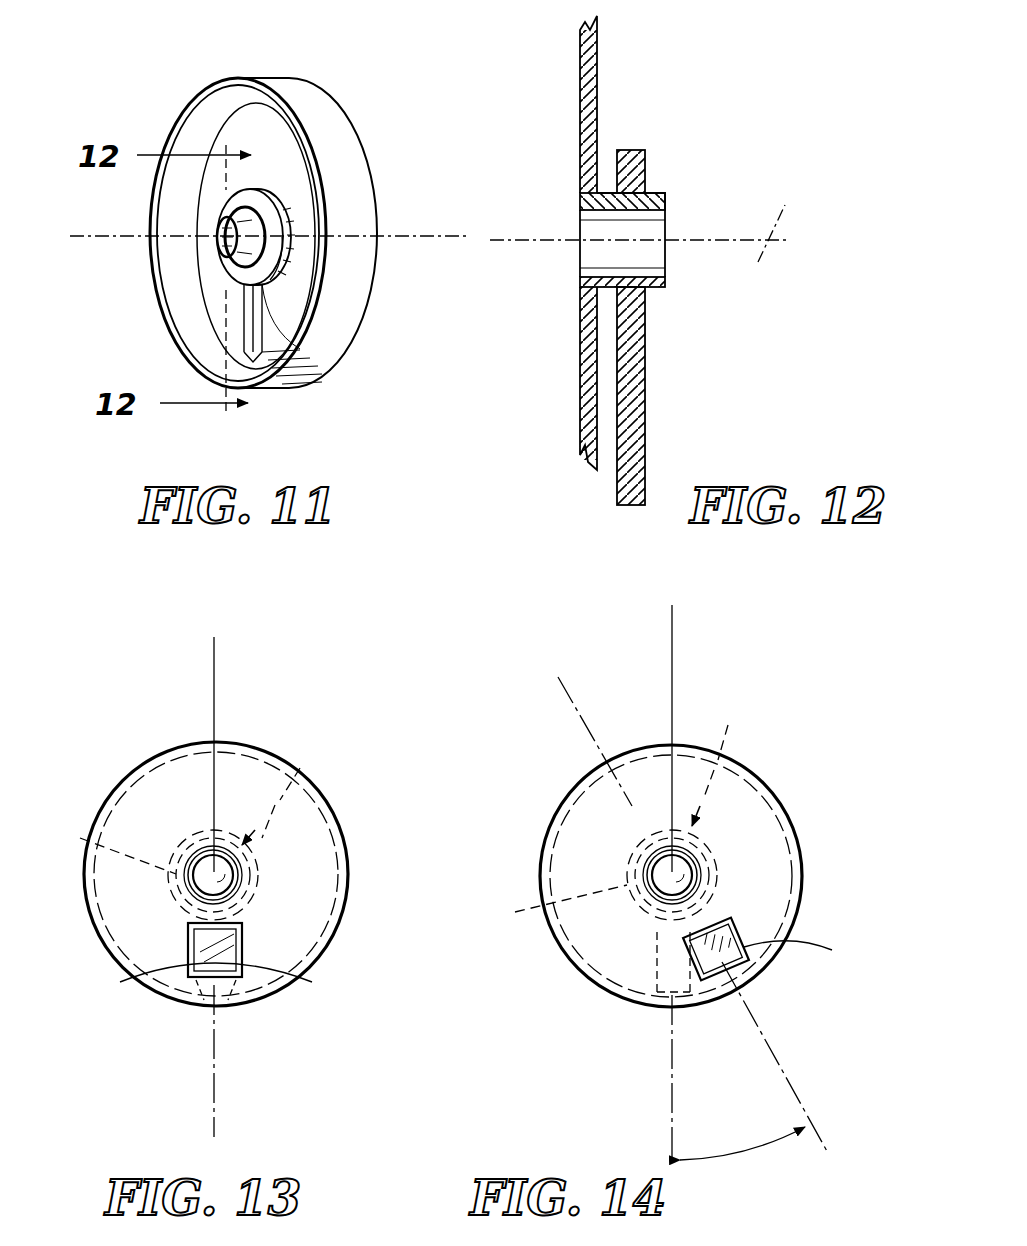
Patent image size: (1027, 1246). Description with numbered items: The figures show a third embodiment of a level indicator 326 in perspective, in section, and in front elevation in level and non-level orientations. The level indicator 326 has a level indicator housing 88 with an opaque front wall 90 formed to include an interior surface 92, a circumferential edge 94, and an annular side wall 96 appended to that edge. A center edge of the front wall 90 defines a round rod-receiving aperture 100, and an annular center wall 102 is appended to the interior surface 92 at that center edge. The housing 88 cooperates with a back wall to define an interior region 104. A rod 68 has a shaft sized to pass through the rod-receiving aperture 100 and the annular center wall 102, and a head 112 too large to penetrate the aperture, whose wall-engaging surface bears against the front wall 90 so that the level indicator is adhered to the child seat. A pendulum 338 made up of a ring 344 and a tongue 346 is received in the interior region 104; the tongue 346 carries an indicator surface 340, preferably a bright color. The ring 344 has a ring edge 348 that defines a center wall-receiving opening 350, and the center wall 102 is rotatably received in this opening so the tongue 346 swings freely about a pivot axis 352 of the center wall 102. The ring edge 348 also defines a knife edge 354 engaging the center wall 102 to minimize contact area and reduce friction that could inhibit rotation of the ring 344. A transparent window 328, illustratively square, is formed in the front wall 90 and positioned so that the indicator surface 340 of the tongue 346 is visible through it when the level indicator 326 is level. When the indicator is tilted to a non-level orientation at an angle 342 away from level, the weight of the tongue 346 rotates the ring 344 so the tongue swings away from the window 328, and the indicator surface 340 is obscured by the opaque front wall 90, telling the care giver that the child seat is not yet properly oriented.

In FIG. 11, the level indicator 326 is at (388, 110).
In FIG. 13, the level indicator 326 is at (126, 716).
In FIG. 14, the level indicator 326 is at (529, 724).
In FIG. 11, the level indicator housing 88 is at (318, 394).
In FIG. 12, the level indicator housing 88 is at (577, 434).
In FIG. 13, the level indicator housing 88 is at (265, 742).
In FIG. 14, the level indicator housing 88 is at (756, 768).
In FIG. 11, the front wall 90 is at (246, 118).
In FIG. 12, the front wall 90 is at (583, 62).
In FIG. 13, the front wall 90 is at (120, 810).
In FIG. 14, the front wall 90 is at (590, 800).
In FIG. 11, the interior surface 92 is at (230, 140).
In FIG. 12, the interior surface 92 is at (595, 70).
In FIG. 11, the circumferential edge 94 is at (300, 83).
In FIG. 13, the circumferential edge 94 is at (135, 770).
In FIG. 14, the circumferential edge 94 is at (563, 826).
In FIG. 11, the annular side wall 96 is at (333, 125).
In FIG. 11, the interior region 104 is at (264, 118).
In FIG. 11, the ring 344 is at (262, 200).
In FIG. 12, the ring 344 is at (641, 166).
In FIG. 13, the ring 344 is at (140, 870).
In FIG. 14, the ring 344 is at (597, 884).
In FIG. 11, the ring edge 348 is at (262, 233).
In FIG. 12, the ring edge 348 is at (648, 192).
In FIG. 11, the center wall-receiving opening 350 is at (290, 244).
In FIG. 12, the center wall-receiving opening 350 is at (660, 298).
In FIG. 11, the pivot axis 352 is at (456, 268).
In FIG. 12, the pivot axis 352 is at (666, 220).
In FIG. 13, the pivot axis 352 is at (200, 882).
In FIG. 14, the pivot axis 352 is at (669, 877).
In FIG. 12, the knife edge 354 is at (580, 218).
In FIG. 11, the annular center wall 102 is at (217, 241).
In FIG. 12, the annular center wall 102 is at (650, 216).
In FIG. 11, the rod-receiving aperture 100 is at (218, 254).
In FIG. 12, the rod-receiving aperture 100 is at (576, 260).
In FIG. 11, the pendulum 338 is at (250, 300).
In FIG. 12, the pendulum 338 is at (643, 146).
In FIG. 13, the pendulum 338 is at (302, 768).
In FIG. 14, the pendulum 338 is at (720, 757).
In FIG. 12, the indicator surface 340 is at (615, 377).
In FIG. 13, the indicator surface 340 is at (206, 976).
In FIG. 11, the tongue 346 is at (320, 352).
In FIG. 12, the tongue 346 is at (640, 356).
In FIG. 13, the tongue 346 is at (205, 963).
In FIG. 14, the tongue 346 is at (634, 980).
In FIG. 13, the transparent window 328 is at (250, 968).
In FIG. 14, the transparent window 328 is at (774, 949).
In FIG. 13, the rod 68 is at (194, 888).
In FIG. 14, the rod 68 is at (678, 871).
In FIG. 13, the head 112 is at (225, 872).
In FIG. 14, the head 112 is at (662, 868).
In FIG. 14, the angle 342 is at (725, 1148).